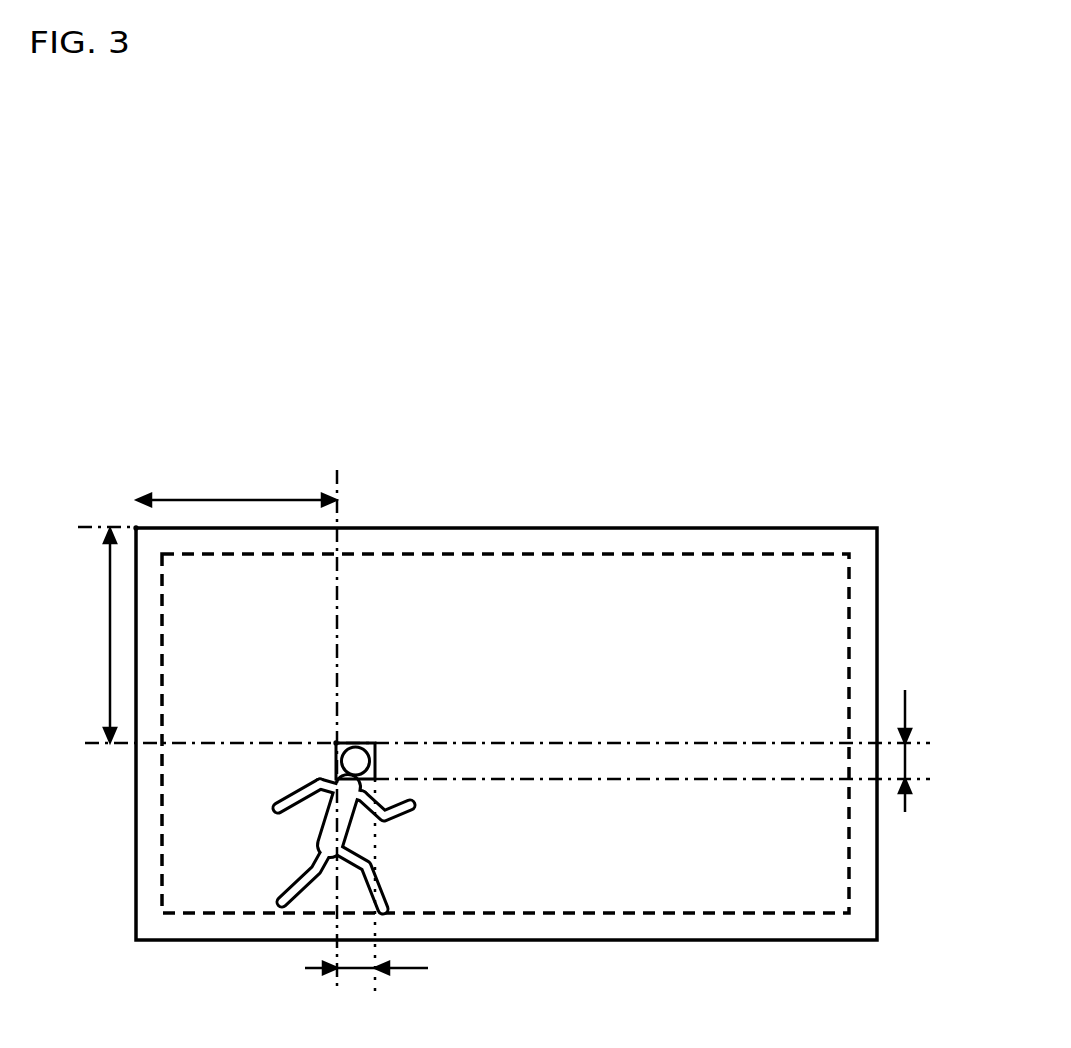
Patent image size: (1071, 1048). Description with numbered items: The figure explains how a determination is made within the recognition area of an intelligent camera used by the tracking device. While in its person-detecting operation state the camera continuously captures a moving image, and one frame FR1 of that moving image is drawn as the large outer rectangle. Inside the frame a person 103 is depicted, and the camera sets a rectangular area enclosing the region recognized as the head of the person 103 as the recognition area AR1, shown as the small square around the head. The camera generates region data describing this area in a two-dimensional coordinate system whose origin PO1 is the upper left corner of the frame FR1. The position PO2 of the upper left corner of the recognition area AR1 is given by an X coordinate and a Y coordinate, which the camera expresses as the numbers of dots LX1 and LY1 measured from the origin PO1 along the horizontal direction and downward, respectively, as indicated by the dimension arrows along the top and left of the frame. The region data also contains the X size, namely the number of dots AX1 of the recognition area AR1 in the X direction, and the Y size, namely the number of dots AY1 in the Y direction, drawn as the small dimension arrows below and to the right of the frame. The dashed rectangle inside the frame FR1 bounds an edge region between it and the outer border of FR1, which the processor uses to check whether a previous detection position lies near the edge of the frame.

The frame FR1 is at (877, 607).
The person 103 is at (286, 802).
The recognition area AR1 is at (367, 743).
The origin PO1 is at (136, 527).
The position of the upper left corner of the recognition area PO2 is at (336, 743).
The dots in the X direction LX1 is at (236, 490).
The dots in the Y direction LY1 is at (92, 635).
The X size AX1 is at (370, 980).
The Y size AY1 is at (924, 751).